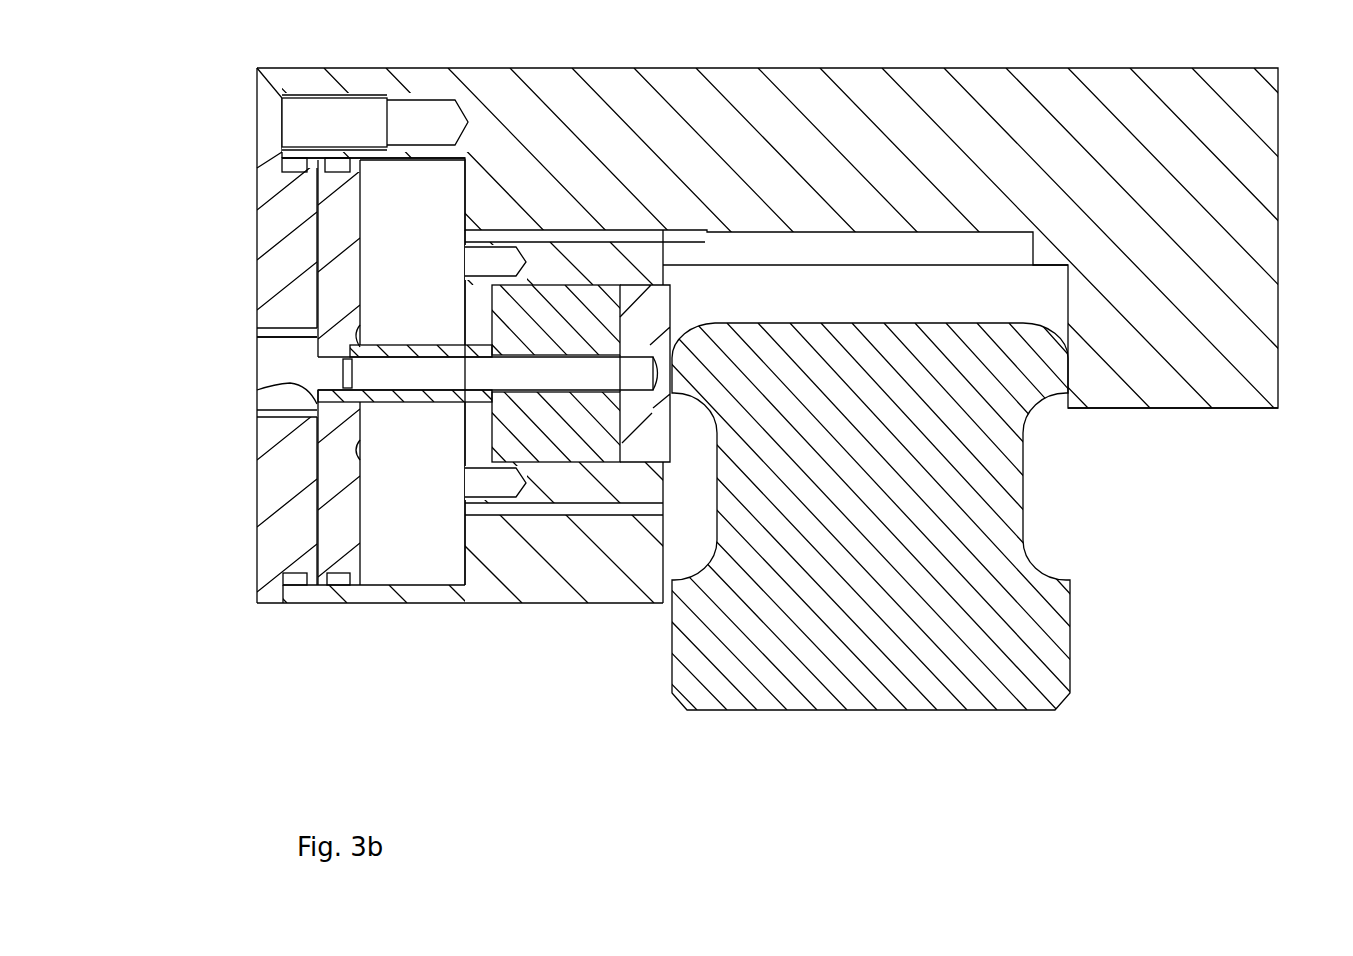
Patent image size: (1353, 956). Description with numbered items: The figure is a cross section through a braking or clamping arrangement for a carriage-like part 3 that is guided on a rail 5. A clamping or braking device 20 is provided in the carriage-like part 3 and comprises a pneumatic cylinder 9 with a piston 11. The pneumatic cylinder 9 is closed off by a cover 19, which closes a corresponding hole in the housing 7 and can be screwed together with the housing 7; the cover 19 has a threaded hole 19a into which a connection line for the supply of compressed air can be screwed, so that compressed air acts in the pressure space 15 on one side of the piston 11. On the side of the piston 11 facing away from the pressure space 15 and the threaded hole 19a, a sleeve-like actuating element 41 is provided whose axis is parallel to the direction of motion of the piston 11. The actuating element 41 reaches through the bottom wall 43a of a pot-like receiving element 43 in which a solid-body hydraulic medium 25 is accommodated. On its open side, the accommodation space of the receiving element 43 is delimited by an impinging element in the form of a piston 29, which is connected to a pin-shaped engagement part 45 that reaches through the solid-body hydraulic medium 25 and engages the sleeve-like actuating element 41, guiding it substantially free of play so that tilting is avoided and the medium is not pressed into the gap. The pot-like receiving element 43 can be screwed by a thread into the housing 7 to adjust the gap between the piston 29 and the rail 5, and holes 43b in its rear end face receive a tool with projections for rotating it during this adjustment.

The carriage-like part 3 is at (1243, 414).
The rail 5 is at (1060, 617).
The housing 7 is at (1268, 246).
The pneumatic cylinder 9 is at (409, 553).
The piston 11 is at (350, 463).
The pressure space 15 is at (257, 390).
The cover 19 is at (268, 272).
The threaded hole 19a is at (287, 341).
The clamping or braking device 20 is at (208, 430).
The solid-body hydraulic medium 25 is at (555, 303).
The piston (impinging element) 29 is at (663, 307).
The sleeve-like actuating element 41 is at (390, 348).
The pot-like receiving element 43 is at (527, 439).
The bottom wall 43a is at (478, 440).
The holes 43b is at (478, 261).
The pin-shaped engagement part 45 is at (632, 374).